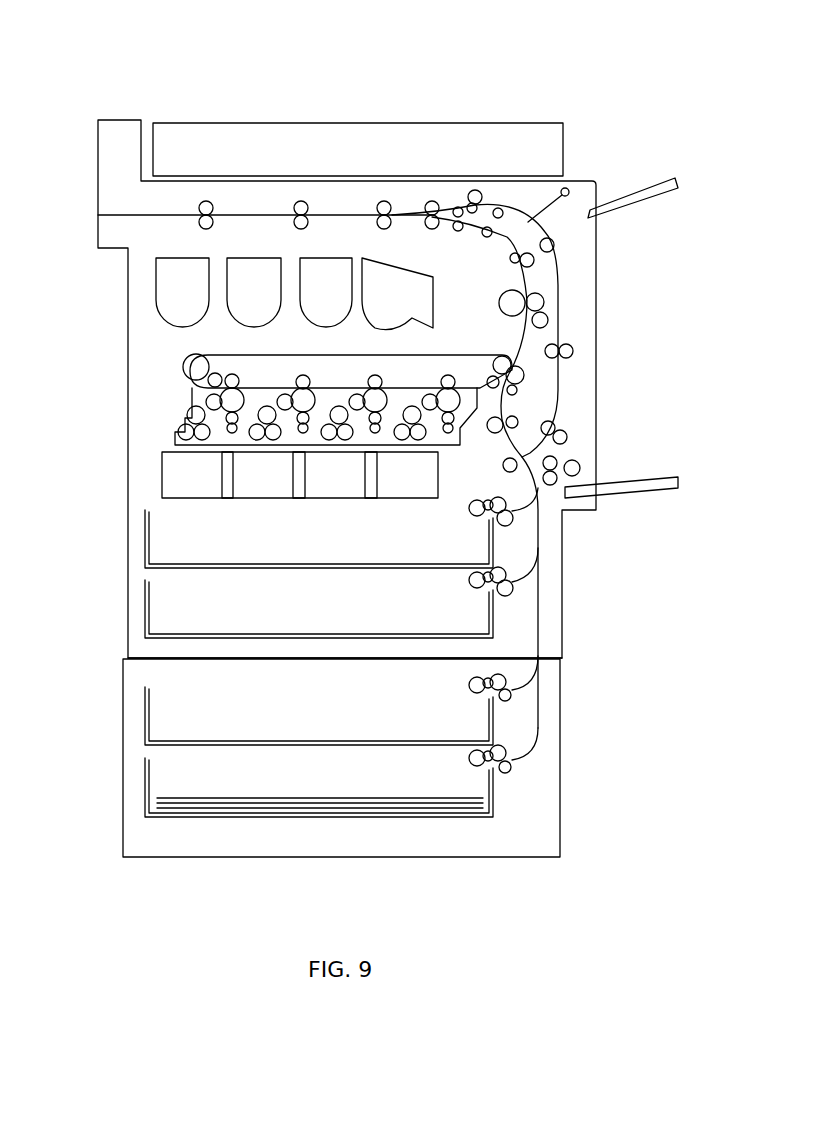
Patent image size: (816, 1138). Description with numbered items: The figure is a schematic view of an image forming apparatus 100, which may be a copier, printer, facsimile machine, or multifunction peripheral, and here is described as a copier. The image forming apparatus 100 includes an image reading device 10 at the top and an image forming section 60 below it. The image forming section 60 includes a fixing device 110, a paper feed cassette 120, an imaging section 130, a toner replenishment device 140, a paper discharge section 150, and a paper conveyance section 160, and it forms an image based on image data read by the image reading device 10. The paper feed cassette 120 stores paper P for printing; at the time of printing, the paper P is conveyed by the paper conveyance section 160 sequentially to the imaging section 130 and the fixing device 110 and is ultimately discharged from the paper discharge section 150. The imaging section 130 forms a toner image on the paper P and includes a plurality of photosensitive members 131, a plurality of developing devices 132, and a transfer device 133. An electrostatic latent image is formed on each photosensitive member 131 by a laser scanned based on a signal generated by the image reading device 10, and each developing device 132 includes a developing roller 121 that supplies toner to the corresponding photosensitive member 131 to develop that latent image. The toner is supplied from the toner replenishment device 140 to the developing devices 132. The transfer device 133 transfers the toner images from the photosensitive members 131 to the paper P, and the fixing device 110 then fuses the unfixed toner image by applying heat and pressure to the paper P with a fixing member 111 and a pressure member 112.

The image forming apparatus 100 is at (421, 66).
The image reading device 10 is at (488, 116).
The paper discharge section 150 is at (112, 167).
The paper conveyance section 160 is at (264, 196).
The image forming section 60 is at (637, 404).
The toner replenishment device 140 is at (146, 319).
The imaging section 130 is at (266, 426).
The transfer device 133 is at (173, 369).
The developing device 132 is at (276, 428).
The developing roller 121 is at (193, 393).
The photosensitive member 131 is at (248, 394).
The fixing device 110 is at (543, 315).
The fixing member 111 is at (515, 318).
The pressure member 112 is at (545, 302).
The paper feed cassette 120 is at (265, 701).
The paper P is at (188, 812).